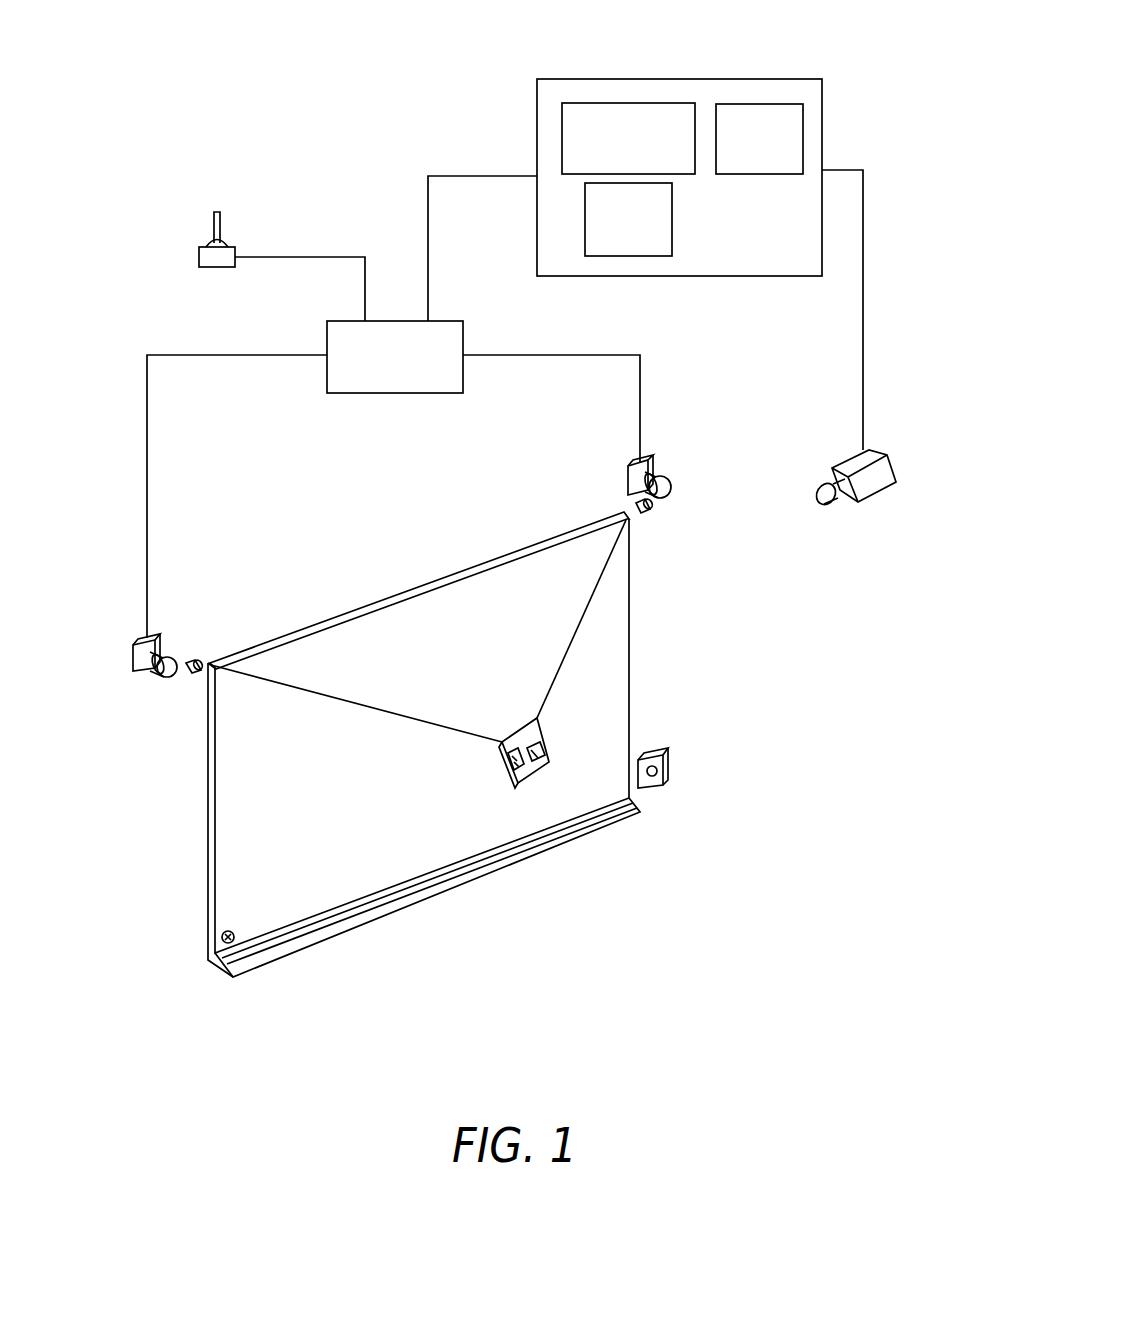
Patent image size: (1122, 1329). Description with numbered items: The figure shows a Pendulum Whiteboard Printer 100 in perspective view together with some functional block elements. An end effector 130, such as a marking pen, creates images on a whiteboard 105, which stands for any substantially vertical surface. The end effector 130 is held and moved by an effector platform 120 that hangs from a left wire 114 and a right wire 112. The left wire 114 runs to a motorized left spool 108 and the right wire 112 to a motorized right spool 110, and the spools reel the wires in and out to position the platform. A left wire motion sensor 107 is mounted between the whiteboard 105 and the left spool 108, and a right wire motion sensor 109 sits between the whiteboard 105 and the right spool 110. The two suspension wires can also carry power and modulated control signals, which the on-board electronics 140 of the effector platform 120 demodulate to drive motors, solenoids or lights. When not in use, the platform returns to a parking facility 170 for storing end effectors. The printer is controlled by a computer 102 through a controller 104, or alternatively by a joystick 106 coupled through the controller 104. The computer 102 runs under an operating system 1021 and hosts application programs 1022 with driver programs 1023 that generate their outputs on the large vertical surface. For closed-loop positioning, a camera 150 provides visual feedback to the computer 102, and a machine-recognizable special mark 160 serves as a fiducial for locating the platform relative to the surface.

The Pendulum Whiteboard Printer 100 is at (297, 178).
The computer 102 is at (657, 168).
The Operating System (OS) 1021 is at (630, 257).
The application programs 1022 is at (622, 103).
The driver programs 1023 is at (760, 104).
The controller 104 is at (463, 350).
The whiteboard 105 is at (452, 572).
The joystick 106 is at (199, 257).
The left wire motion sensor 107 is at (192, 660).
The left spool 108 is at (150, 672).
The right wire motion sensor 109 is at (652, 508).
The right spool 110 is at (655, 480).
The right wire 112 is at (580, 633).
The left wire 114 is at (352, 700).
The effector platform 120 is at (525, 733).
The end effector 130 is at (533, 750).
The on-board electronics 140 is at (507, 770).
The camera 150 is at (888, 470).
The special mark 160 is at (222, 936).
The parking facility 170 is at (655, 788).